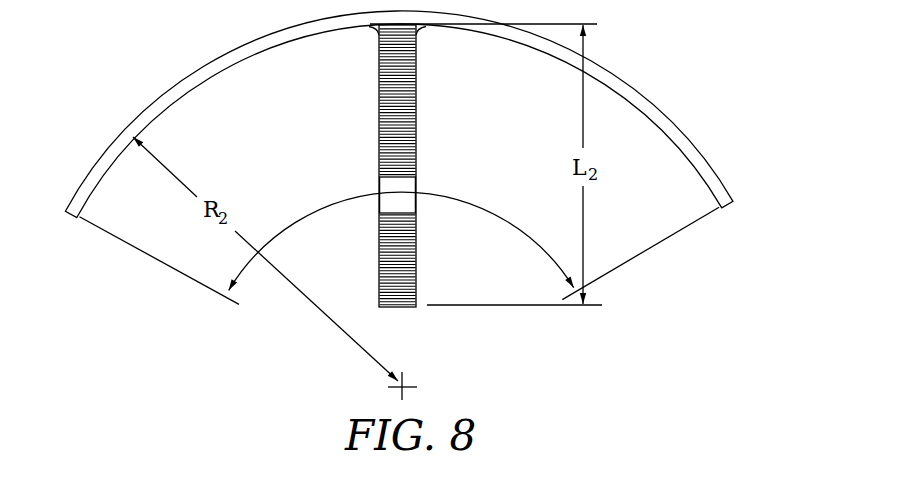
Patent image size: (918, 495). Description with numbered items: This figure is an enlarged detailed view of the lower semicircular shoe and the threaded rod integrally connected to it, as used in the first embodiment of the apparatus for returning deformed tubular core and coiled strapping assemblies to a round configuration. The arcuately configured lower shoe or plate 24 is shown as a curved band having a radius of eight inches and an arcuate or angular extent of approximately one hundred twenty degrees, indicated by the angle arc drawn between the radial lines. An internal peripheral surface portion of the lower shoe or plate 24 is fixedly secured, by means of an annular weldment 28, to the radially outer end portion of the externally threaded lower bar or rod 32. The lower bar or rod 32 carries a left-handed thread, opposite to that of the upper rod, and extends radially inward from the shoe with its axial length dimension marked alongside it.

The lower shoe or plate 24 is at (165, 93).
The annular weldment 28 is at (372, 32).
The lower threaded bar or rod 32 is at (397, 123).